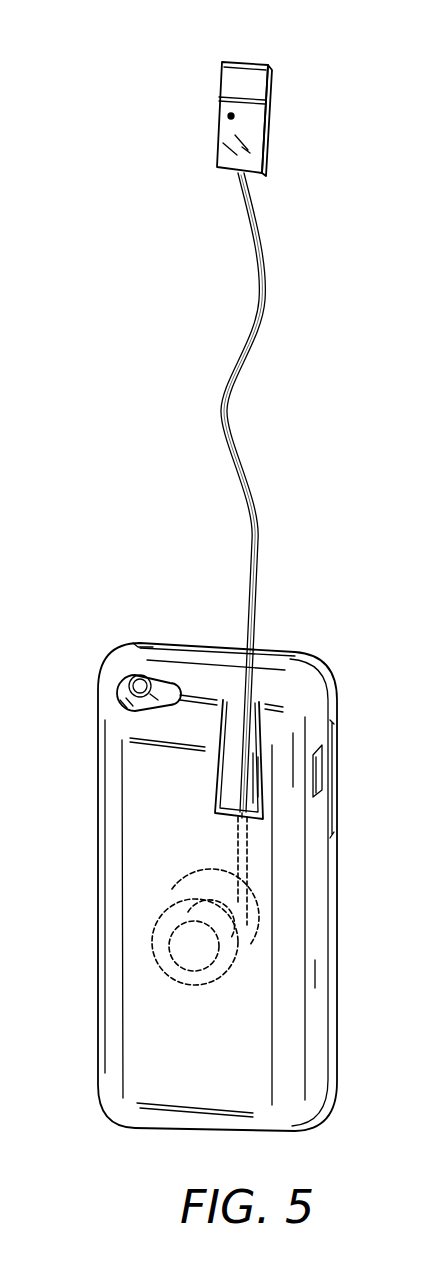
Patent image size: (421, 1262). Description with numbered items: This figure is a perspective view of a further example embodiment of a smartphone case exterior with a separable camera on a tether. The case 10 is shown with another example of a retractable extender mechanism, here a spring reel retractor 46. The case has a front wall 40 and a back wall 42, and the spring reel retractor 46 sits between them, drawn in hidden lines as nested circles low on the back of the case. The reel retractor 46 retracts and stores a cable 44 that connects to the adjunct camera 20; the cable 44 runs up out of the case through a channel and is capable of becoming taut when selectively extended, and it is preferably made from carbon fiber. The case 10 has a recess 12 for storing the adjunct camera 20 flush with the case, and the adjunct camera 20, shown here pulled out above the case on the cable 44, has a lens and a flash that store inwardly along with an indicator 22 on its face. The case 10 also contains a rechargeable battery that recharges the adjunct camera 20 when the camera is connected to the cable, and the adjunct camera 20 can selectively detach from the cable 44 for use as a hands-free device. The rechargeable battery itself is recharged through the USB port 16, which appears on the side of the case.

The case 10 is at (70, 627).
The recess 12 is at (258, 723).
The USB port 16 is at (313, 772).
The adjunct camera 20 is at (297, 92).
The indicator 22 is at (229, 118).
The front wall 40 is at (335, 870).
The back wall 42 is at (143, 847).
The cable 44 is at (255, 530).
The spring reel retractor 46 is at (227, 962).